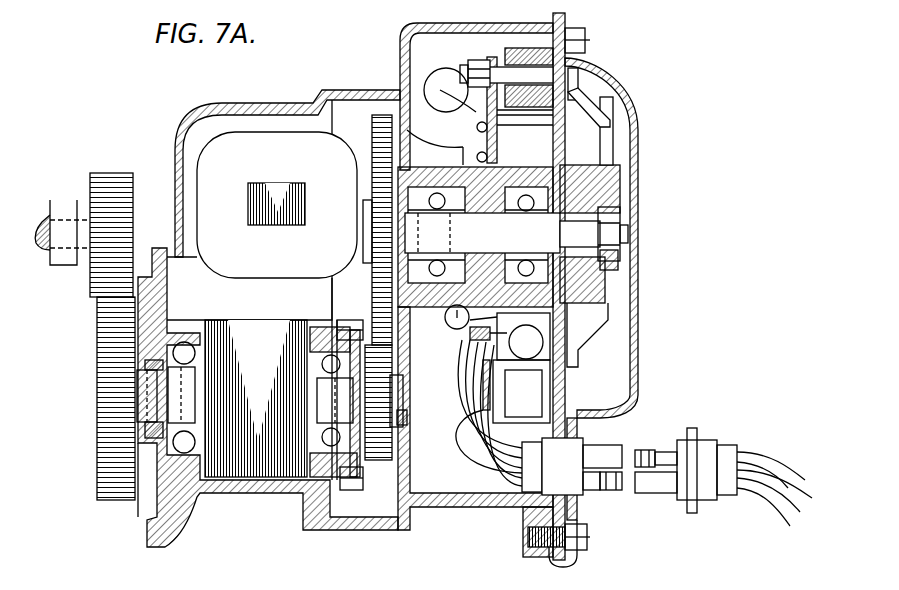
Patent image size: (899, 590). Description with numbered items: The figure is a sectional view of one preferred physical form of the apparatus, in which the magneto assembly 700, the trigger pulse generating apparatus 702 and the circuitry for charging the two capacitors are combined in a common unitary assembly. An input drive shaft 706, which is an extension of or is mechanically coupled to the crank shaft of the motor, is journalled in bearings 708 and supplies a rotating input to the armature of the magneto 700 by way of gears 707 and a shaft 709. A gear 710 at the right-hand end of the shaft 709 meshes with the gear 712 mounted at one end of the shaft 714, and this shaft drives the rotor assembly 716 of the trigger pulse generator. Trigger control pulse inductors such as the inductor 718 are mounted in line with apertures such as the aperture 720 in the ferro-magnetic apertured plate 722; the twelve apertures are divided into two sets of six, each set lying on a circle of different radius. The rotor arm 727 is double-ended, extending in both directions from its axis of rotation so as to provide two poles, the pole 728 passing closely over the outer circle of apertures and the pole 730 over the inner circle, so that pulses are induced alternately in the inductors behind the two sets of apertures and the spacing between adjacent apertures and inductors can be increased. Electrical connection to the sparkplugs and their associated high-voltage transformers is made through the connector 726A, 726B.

The magneto assembly 700 is at (298, 164).
The trigger pulse generating apparatus 702 is at (610, 105).
The input drive shaft 706 is at (46, 214).
The gears 707 is at (106, 325).
The bearings 708 is at (66, 266).
The shaft 709 is at (150, 393).
The gear 710 is at (386, 461).
The gear 712 is at (373, 129).
The shaft 714 is at (500, 247).
The rotor assembly 716 is at (613, 177).
The trigger control pulse inductor 718 is at (538, 77).
The aperture 720 is at (573, 101).
The ferro-magnetic apertured plate 722 is at (563, 400).
The connector 726A is at (602, 447).
The connector 726B is at (667, 491).
The rotor arm 727 is at (613, 150).
The pole 728 is at (573, 81).
The pole 730 is at (579, 355).